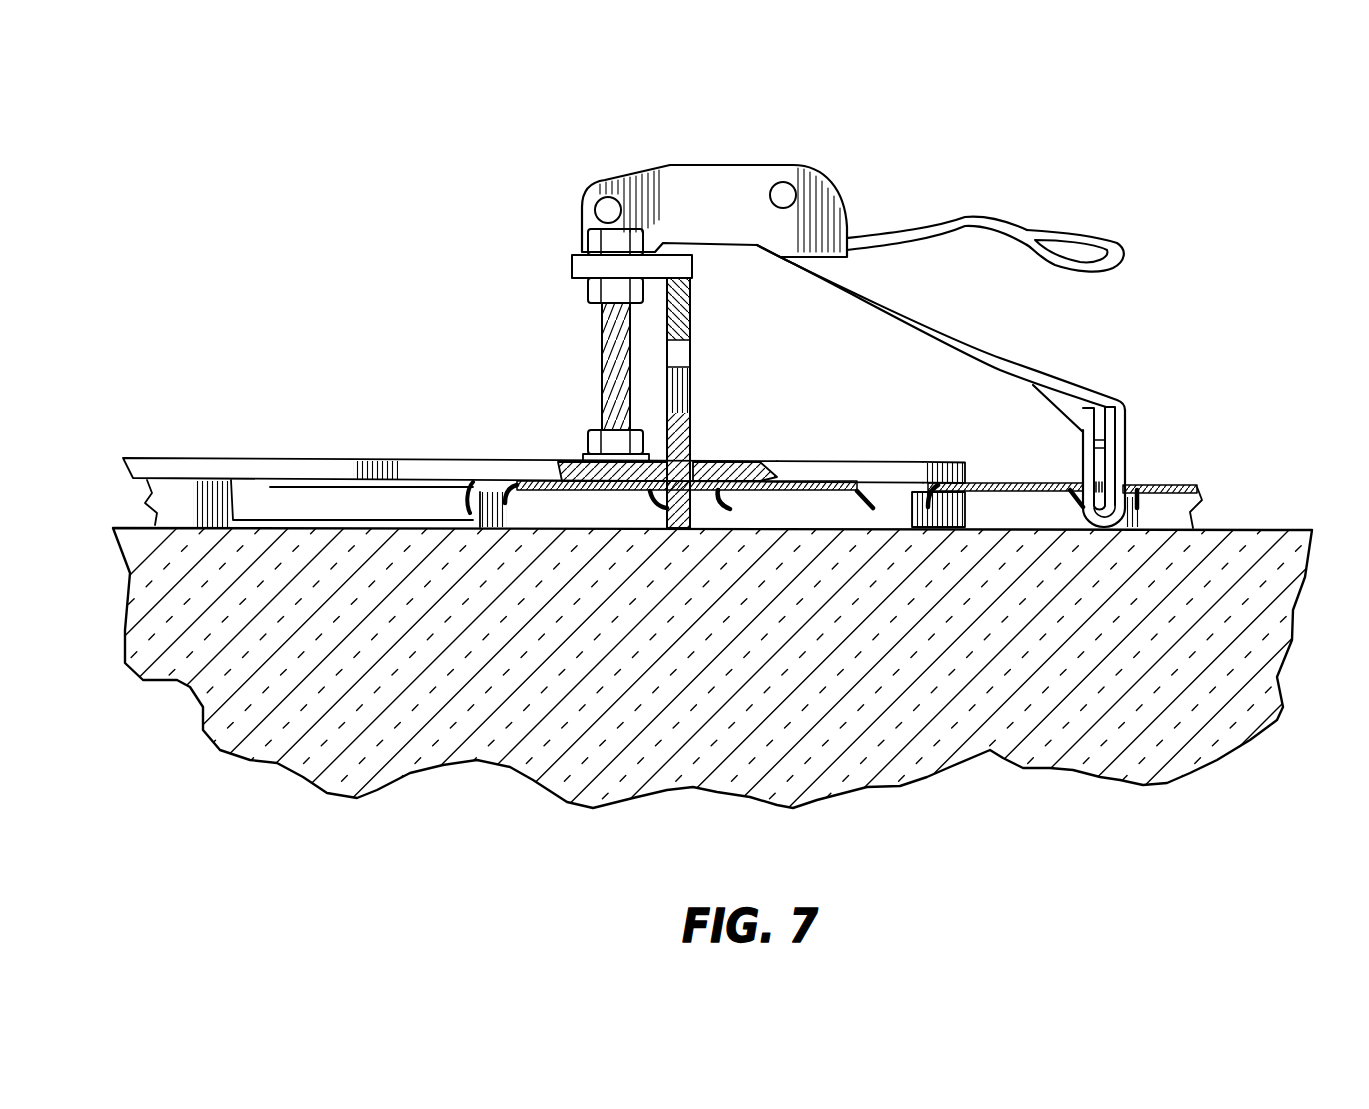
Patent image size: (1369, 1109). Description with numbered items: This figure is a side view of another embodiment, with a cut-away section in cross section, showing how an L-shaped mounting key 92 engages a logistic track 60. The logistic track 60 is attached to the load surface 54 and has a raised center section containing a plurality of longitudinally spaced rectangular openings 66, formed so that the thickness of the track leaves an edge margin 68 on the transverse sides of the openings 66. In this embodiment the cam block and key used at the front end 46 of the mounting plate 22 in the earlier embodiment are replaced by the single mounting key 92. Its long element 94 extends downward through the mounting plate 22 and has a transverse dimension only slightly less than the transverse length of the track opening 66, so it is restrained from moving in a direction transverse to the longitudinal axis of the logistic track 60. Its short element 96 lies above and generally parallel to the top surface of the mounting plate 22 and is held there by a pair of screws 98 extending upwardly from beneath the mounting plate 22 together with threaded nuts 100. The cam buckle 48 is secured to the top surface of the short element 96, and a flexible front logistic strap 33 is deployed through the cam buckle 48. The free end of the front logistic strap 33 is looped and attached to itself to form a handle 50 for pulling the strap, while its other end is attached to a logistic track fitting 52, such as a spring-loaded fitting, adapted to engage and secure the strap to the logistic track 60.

The mounting plate 22 is at (313, 470).
The front logistic strap 33 is at (897, 327).
The front end 46 is at (898, 462).
The cam buckle 48 is at (742, 188).
The handle 50 is at (1097, 237).
The logistic track fitting 52 is at (1113, 466).
The load surface 54 is at (1237, 527).
The logistic track 60 is at (260, 503).
The rectangular openings 66 is at (890, 480).
The edge margin 68 is at (697, 470).
The mounting key 92 is at (655, 327).
The long element 94 is at (673, 403).
The short element 96 is at (592, 267).
The screws 98 is at (603, 367).
The threaded nuts 100 is at (592, 240).